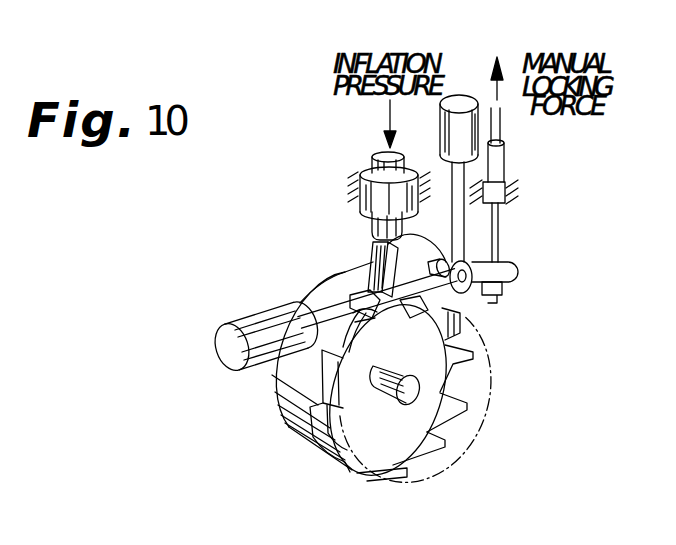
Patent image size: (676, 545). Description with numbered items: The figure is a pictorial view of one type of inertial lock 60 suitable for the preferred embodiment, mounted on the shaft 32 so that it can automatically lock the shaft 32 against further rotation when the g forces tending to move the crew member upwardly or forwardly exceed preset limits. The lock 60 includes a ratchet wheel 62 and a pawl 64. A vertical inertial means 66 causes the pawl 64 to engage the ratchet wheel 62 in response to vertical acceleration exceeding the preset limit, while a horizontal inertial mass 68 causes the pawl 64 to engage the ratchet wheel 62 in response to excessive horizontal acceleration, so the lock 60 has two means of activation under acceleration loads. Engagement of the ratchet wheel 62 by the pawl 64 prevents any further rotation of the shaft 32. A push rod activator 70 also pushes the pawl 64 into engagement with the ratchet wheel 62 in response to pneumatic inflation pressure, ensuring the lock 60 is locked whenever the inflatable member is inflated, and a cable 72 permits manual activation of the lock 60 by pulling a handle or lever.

The inertial lock 60 is at (230, 260).
The shaft 32 is at (420, 418).
The ratchet wheel 62 is at (462, 342).
The pawl 64 is at (372, 252).
The vertical inertial means 66 is at (222, 352).
The horizontal inertial mass 68 is at (458, 96).
The push rod activator 70 is at (372, 230).
The cable 72 is at (504, 156).